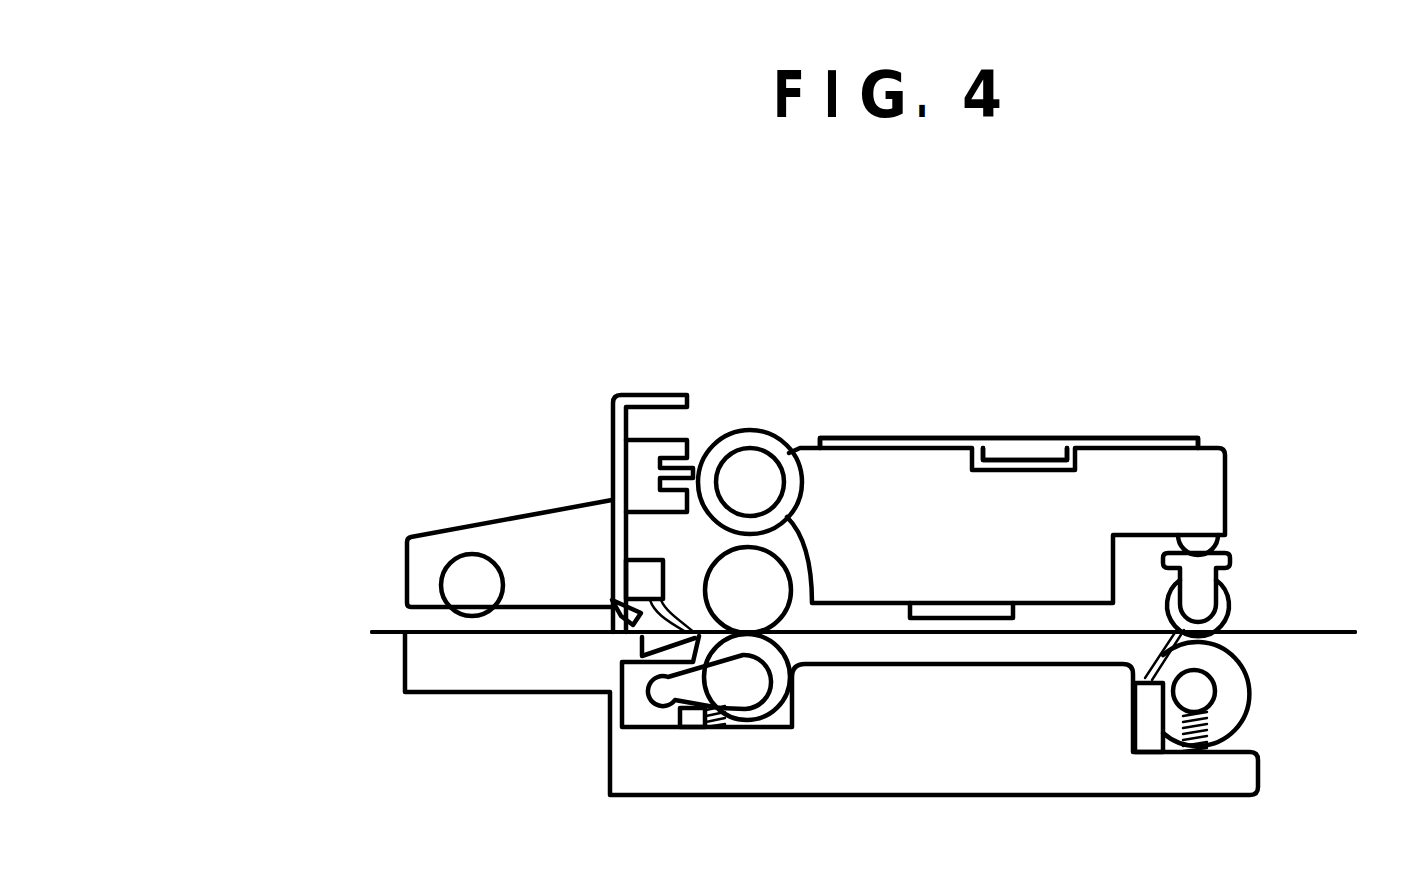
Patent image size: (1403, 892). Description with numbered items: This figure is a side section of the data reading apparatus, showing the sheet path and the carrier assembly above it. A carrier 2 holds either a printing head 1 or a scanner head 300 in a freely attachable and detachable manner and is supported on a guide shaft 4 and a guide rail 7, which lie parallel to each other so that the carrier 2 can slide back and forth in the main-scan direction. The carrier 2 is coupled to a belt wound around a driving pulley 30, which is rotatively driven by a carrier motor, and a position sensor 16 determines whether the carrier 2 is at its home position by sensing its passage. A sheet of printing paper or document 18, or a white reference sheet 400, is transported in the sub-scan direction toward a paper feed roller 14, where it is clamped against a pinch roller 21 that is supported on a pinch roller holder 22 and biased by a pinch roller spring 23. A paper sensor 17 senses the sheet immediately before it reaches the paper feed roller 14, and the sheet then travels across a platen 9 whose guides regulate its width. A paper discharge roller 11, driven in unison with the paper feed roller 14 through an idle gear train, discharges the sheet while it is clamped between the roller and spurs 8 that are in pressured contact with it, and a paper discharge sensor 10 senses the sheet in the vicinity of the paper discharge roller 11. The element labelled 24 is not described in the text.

The printing head 1 is at (1015, 437).
The scanner head 300 is at (1009, 394).
The carrier 2 is at (1152, 460).
The guide shaft 4 is at (752, 455).
The guide rail 7 is at (1228, 552).
The spurs 8 is at (1230, 605).
The platen 9 is at (955, 783).
The paper discharge sensor 10 is at (1147, 740).
The paper discharge roller 11 is at (1240, 684).
The paper feed roller 14 is at (717, 572).
The position sensor 16 is at (673, 440).
The paper sensor 17 is at (635, 573).
The document 18 is at (380, 634).
The white reference sheet 400 is at (799, 680).
The pinch roller 21 is at (767, 710).
The pinch roller holder 22 is at (673, 699).
The pinch roller spring 23 is at (718, 727).
The spring 24 is at (1207, 725).
The driving pulley 30 is at (405, 577).